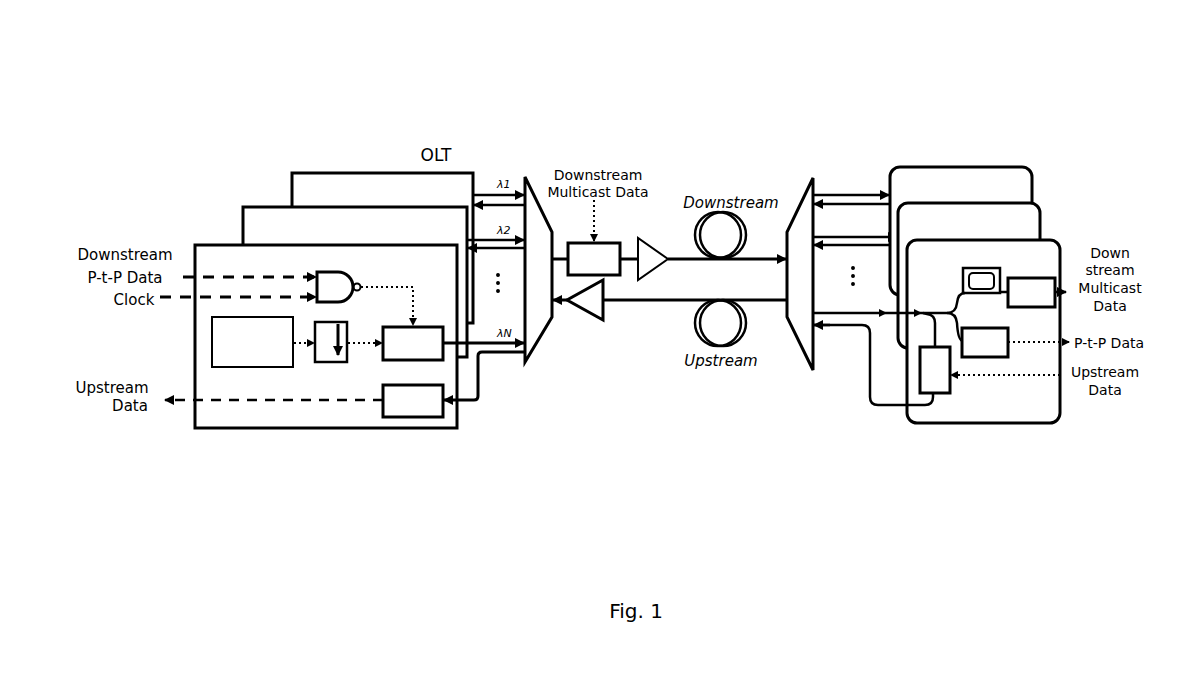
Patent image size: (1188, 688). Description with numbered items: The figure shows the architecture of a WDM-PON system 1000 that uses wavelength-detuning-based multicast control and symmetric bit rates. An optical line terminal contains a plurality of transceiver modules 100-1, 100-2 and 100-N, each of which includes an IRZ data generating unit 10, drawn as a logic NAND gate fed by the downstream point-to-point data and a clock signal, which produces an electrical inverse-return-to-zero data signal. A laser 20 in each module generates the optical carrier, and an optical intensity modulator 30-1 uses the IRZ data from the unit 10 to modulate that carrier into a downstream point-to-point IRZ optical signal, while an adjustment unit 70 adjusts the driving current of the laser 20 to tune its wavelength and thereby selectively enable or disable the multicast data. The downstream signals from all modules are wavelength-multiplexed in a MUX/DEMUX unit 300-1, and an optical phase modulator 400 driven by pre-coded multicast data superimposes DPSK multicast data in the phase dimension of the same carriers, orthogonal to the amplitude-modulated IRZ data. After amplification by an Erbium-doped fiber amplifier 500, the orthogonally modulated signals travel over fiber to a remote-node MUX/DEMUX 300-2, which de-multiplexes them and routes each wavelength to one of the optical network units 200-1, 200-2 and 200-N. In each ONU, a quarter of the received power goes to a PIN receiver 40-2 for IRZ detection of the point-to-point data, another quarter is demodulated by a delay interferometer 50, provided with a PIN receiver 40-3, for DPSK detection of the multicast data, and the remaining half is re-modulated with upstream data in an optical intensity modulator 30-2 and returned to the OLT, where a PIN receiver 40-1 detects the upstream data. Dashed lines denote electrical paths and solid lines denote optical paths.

The WDM-PON system 1000 is at (997, 46).
The transceiver module 100-1 is at (340, 172).
The transceiver module 100-2 is at (277, 206).
The transceiver module 100-N is at (293, 430).
The IRZ data generating unit 10 is at (336, 283).
The adjustment unit 70 is at (212, 343).
The laser 20 is at (303, 362).
The optical intensity modulator 30-1 is at (443, 360).
The PIN receiver 40-1 is at (400, 417).
The MUX/DEMUX unit 300-1 is at (524, 185).
The remote node MUX/DEMUX 300-2 is at (788, 230).
The optical phase modulator 400 is at (620, 276).
The Erbium-doped optical fiber amplifier 500 is at (652, 262).
The optical network unit 200-1 is at (953, 166).
The optical network unit 200-2 is at (917, 223).
The optical network unit 200-N is at (1058, 420).
The delay interferometer 50 is at (1013, 268).
The PIN receiver 40-3 is at (1045, 278).
The PIN receiver 40-2 is at (995, 358).
The optical intensity modulator 30-2 is at (945, 395).